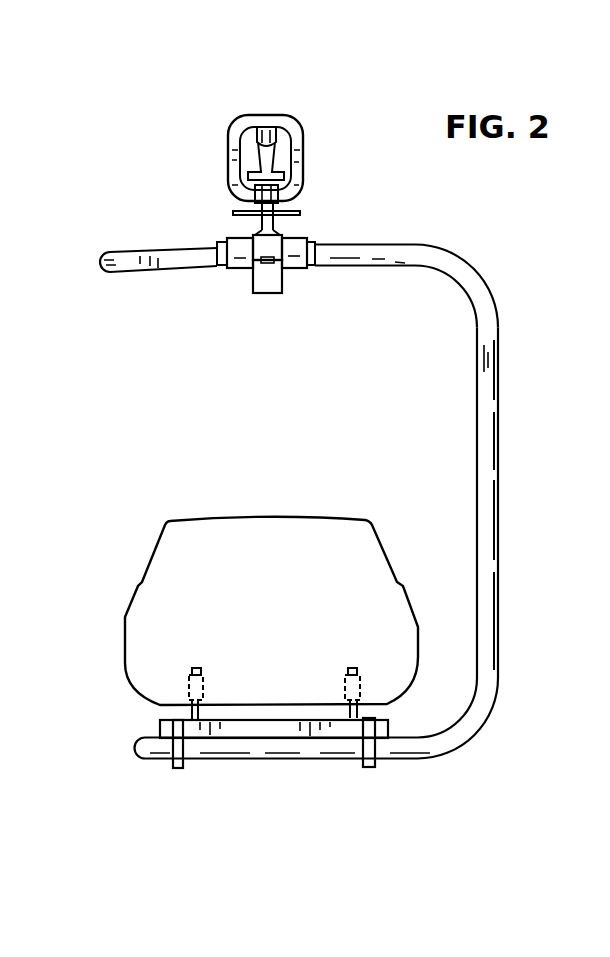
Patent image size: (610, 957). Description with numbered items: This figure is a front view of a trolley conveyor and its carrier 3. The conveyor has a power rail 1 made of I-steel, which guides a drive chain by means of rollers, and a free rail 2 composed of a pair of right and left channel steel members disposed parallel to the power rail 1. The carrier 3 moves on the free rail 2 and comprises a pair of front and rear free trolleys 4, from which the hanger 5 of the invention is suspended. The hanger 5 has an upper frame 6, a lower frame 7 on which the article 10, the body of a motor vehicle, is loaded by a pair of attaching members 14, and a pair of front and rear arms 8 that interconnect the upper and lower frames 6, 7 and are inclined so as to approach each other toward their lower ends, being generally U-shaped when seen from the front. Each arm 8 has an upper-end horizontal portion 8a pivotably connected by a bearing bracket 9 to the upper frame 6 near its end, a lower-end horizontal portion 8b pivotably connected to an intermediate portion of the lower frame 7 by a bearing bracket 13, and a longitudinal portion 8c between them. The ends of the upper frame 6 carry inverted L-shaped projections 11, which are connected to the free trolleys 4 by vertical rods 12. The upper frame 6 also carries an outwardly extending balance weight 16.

The power rail 1 is at (265, 133).
The free rail 2 is at (301, 193).
The carrier 3 is at (512, 250).
The free trolley 4 is at (255, 204).
The hanger 5 is at (488, 361).
The upper frame 6 is at (269, 282).
The lower frame 7 is at (237, 727).
The arm 8 is at (488, 466).
The upper-end horizontal portion 8a is at (390, 258).
The lower-end horizontal portion 8b is at (296, 752).
The longitudinal portion 8c is at (489, 519).
The bearing bracket 9 is at (294, 244).
The article 10 is at (185, 520).
The inverted L-shaped projection 11 is at (267, 245).
The vertical rod 12 is at (247, 222).
The bearing bracket 13 is at (368, 768).
The attaching member 14 is at (432, 673).
The balance weight 16 is at (108, 254).